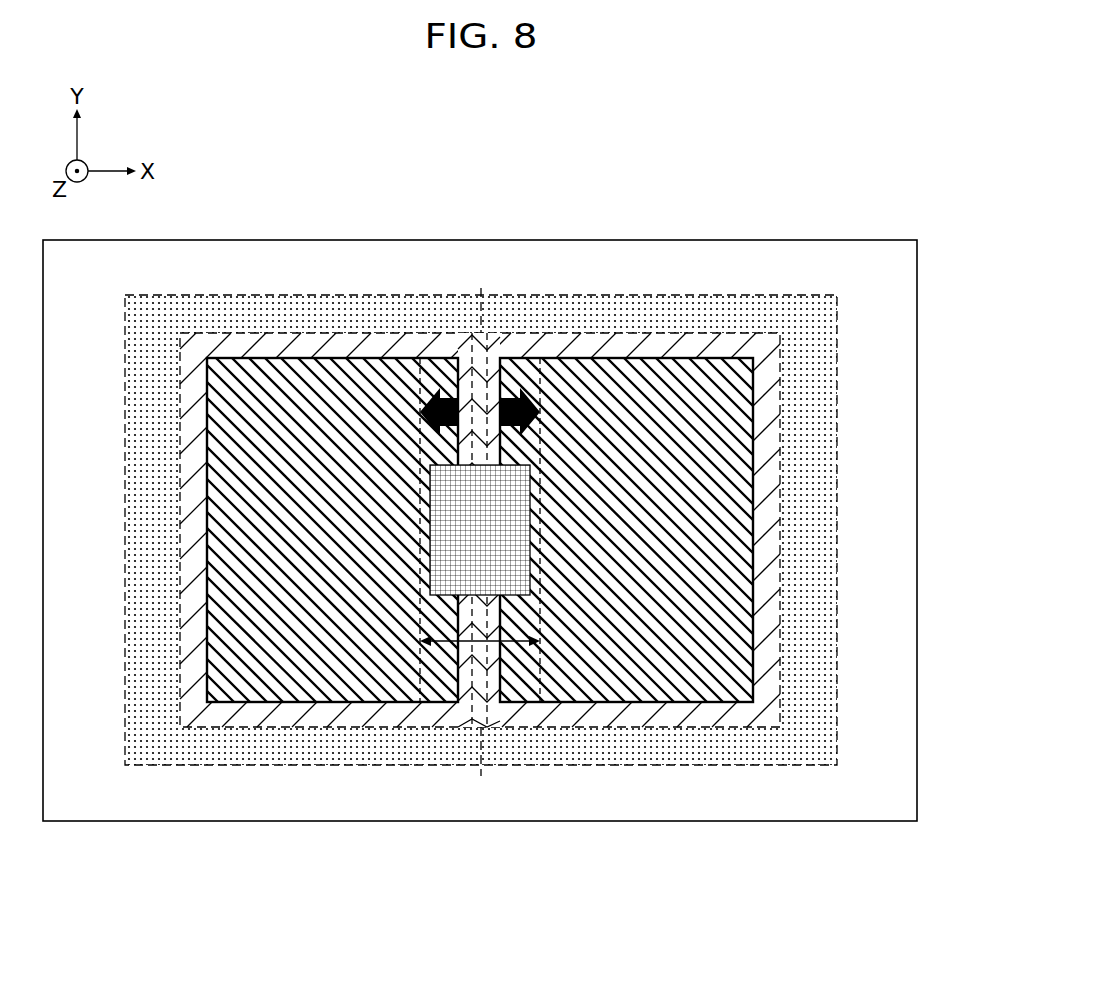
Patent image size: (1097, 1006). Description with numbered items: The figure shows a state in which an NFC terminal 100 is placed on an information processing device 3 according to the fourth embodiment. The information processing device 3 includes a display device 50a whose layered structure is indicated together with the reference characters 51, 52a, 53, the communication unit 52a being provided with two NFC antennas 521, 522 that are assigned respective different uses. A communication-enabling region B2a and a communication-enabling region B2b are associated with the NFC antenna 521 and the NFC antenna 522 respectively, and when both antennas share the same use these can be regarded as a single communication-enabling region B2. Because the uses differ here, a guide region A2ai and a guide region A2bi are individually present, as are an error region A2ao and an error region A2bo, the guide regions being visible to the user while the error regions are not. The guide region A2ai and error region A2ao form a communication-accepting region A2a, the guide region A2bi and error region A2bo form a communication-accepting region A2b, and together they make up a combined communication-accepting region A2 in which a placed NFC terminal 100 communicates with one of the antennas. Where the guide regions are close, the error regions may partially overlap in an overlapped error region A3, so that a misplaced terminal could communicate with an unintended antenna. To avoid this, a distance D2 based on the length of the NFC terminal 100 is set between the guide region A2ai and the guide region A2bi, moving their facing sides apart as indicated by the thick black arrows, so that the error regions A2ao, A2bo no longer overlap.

The information processing device 3 is at (810, 197).
The NFC terminal 100 is at (429, 527).
The display device 50a is at (480, 502).
The first layer 51 is at (480, 502).
The communication unit 52a is at (480, 502).
The third layer 53 is at (600, 239).
The communication-enabling region B2 is at (593, 171).
The communication-enabling region B2a is at (427, 438).
The NFC antenna 521 is at (424, 298).
The communication-enabling region B2b is at (540, 438).
The NFC antenna 522 is at (540, 298).
The combined communication-accepting region A2 is at (365, 945).
The communication-accepting region A2a is at (320, 900).
The guide region A2ai is at (327, 690).
The error region A2ao is at (442, 712).
The communication-accepting region A2b is at (506, 900).
The error region A2bo is at (518, 712).
The guide region A2bi is at (633, 690).
The overlapped error region A3 is at (480, 668).
The distance D2 is at (497, 640).